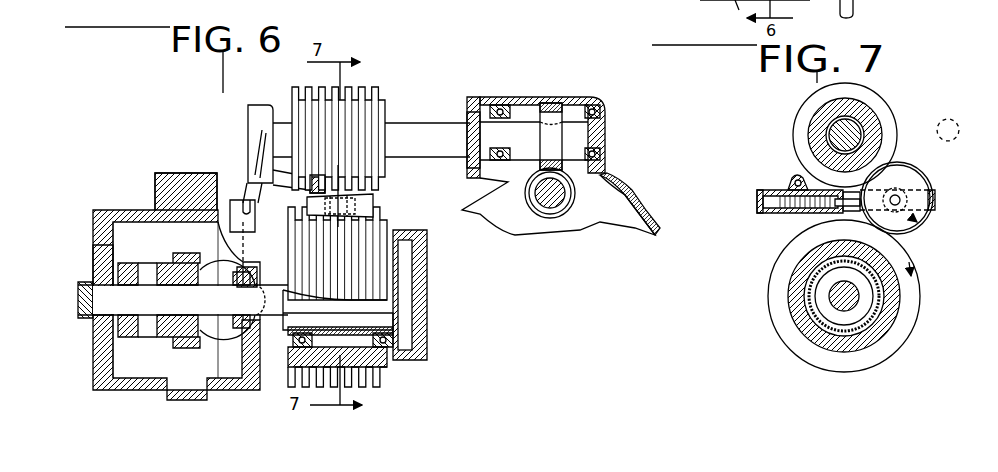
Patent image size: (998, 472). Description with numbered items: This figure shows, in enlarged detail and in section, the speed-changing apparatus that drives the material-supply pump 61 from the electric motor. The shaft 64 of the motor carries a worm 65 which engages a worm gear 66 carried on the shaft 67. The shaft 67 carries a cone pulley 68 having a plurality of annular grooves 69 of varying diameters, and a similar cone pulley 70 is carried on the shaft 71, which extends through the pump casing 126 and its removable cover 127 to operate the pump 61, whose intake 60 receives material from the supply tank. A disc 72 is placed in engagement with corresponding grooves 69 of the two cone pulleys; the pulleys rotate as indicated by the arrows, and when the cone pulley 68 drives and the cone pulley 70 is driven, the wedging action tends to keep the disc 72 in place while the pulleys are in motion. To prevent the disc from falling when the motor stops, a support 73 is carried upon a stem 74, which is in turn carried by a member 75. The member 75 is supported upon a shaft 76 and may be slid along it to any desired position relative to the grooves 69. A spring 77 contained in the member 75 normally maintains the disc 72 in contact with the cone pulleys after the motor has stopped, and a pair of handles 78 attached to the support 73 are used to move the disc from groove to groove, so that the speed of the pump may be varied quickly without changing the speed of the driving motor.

In FIG. 7, the intake 60 is at (853, 12).
In FIG. 6, the pump 61 is at (97, 212).
In FIG. 7, the pump 61 is at (755, 16).
In FIG. 6, the shaft 64 is at (551, 196).
In FIG. 6, the worm 65 is at (574, 201).
In FIG. 6, the worm gear 66 is at (553, 104).
In FIG. 6, the shaft 67 is at (428, 124).
In FIG. 7, the shaft 67 is at (830, 133).
In FIG. 6, the cone pulley 68 is at (374, 85).
In FIG. 7, the cone pulley 68 is at (882, 104).
In FIG. 6, the annular grooves 69 is at (297, 100).
In FIG. 6, the cone pulley 70 is at (386, 366).
In FIG. 7, the cone pulley 70 is at (772, 309).
In FIG. 6, the shaft 71 is at (92, 322).
In FIG. 7, the shaft 71 is at (863, 300).
In FIG. 6, the disc 72 is at (354, 225).
In FIG. 7, the disc 72 is at (928, 180).
In FIG. 7, the support 73 is at (880, 187).
In FIG. 7, the stem 74 is at (843, 213).
In FIG. 7, the member 75 is at (757, 192).
In FIG. 6, the shaft 76 is at (289, 186).
In FIG. 7, the shaft 76 is at (795, 178).
In FIG. 7, the spring 77 is at (775, 214).
In FIG. 6, the handles 78 is at (306, 206).
In FIG. 7, the handles 78 is at (935, 203).
In FIG. 6, the pump casing 126 is at (130, 210).
In FIG. 6, the removable cover 127 is at (93, 256).